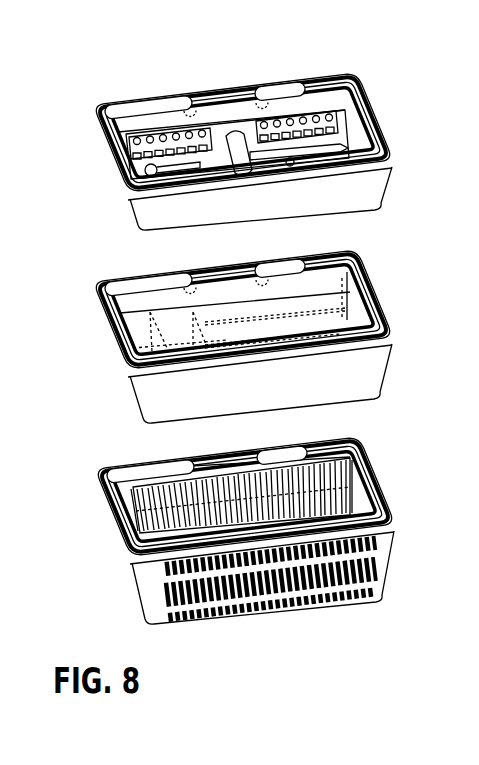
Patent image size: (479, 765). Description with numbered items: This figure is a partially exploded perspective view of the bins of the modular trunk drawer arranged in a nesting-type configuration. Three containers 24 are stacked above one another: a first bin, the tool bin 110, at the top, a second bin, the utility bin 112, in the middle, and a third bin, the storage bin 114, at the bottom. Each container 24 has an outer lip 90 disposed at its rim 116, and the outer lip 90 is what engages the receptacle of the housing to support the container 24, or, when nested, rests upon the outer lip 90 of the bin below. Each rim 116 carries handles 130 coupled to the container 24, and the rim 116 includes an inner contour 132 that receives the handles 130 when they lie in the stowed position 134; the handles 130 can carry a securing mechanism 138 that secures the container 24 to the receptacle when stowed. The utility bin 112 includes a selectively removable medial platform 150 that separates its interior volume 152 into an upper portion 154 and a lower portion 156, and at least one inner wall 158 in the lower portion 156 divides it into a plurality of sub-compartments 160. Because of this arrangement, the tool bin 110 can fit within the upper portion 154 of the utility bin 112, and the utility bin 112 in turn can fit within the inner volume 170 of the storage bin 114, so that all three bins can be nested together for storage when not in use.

The container 24 is at (76, 219).
The outer lip 90 is at (391, 172).
The tool bin 110 is at (110, 158).
The utility bin 112 is at (127, 375).
The storage bin 114 is at (122, 560).
The rim 116 is at (368, 92).
The handle 130 is at (145, 107).
The inner contour 132 is at (217, 100).
The stowed position 134 is at (293, 72).
The securing mechanism 138 is at (199, 108).
The medial platform 150 is at (142, 324).
The interior volume 152 is at (350, 290).
The upper portion 154 is at (210, 293).
The lower portion 156 is at (185, 350).
The inner wall 158 is at (395, 328).
The sub-compartment 160 is at (133, 348).
The inner volume 170 is at (222, 477).